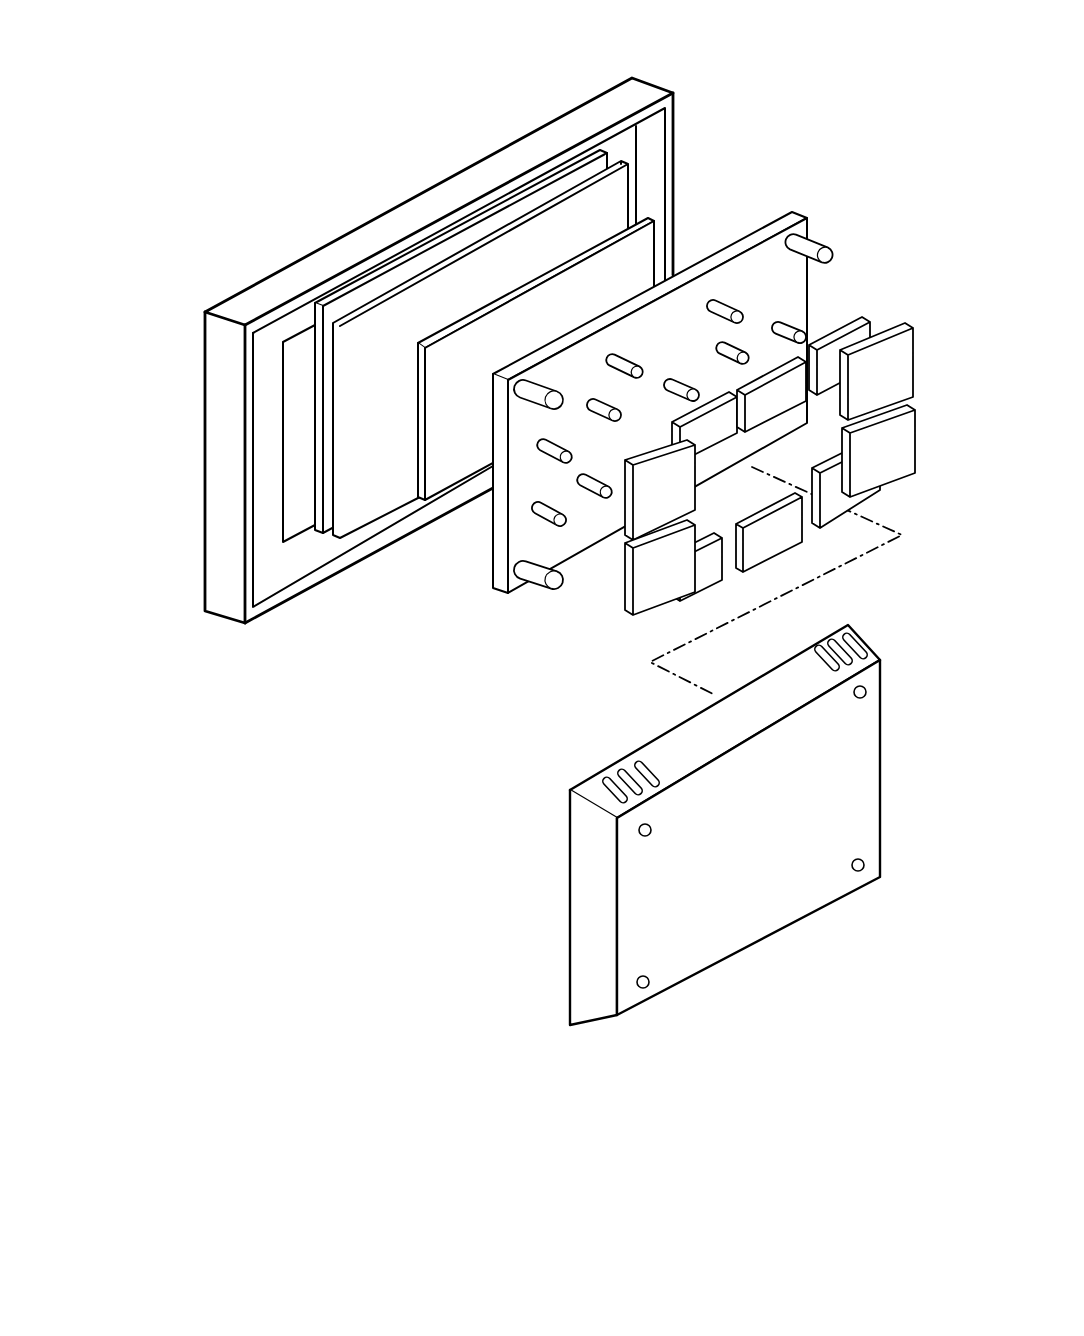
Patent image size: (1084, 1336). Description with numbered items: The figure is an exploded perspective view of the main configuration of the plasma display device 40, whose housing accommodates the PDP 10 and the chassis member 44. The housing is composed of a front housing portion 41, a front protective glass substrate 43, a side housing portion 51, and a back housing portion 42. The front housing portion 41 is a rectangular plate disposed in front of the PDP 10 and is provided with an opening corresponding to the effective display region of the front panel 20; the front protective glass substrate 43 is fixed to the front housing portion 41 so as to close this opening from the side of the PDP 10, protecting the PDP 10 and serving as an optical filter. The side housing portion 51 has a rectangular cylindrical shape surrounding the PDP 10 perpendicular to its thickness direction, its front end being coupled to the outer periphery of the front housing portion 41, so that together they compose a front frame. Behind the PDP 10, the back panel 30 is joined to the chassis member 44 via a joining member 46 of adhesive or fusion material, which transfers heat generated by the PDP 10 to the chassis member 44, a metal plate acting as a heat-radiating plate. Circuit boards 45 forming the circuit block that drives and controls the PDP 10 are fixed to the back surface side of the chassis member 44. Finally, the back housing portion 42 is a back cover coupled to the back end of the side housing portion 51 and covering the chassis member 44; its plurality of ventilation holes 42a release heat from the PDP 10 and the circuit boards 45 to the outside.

The plasma display device 40 is at (348, 178).
The PDP 10 is at (203, 177).
The front panel 20 is at (335, 300).
The back panel 30 is at (390, 287).
The front protective glass substrate 43 is at (300, 408).
The side housing portion 51 is at (378, 377).
The front housing portion 41 is at (265, 555).
The chassis member 44 is at (497, 535).
The joining member 46 is at (598, 273).
The circuit boards 45 is at (652, 583).
The ventilation holes 42a is at (605, 777).
The back housing portion 42 is at (649, 825).